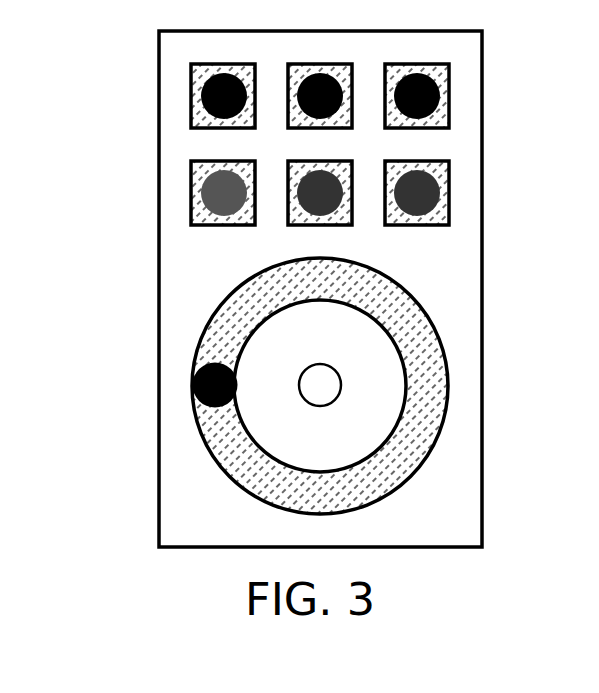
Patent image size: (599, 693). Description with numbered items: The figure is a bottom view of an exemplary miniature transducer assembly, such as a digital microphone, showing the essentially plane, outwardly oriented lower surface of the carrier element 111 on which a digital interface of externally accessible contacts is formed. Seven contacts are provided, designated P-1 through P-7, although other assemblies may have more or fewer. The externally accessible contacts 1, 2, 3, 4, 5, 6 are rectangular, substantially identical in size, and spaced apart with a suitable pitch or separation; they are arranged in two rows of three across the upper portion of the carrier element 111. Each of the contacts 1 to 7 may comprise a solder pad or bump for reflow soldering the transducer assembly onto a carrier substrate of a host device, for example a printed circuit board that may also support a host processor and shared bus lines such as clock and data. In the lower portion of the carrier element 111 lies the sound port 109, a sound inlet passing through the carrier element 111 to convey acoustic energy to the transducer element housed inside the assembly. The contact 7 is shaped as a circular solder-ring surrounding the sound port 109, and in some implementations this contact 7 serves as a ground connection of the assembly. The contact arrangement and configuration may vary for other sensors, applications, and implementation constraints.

The carrier element 111 is at (267, 289).
The sound port 109 is at (345, 406).
The externally accessible contact 1 is at (223, 96).
The externally accessible contact 2 is at (320, 96).
The externally accessible contact 3 is at (417, 96).
The externally accessible contact 4 is at (223, 193).
The externally accessible contact 5 is at (320, 193).
The externally accessible contact 6 is at (417, 193).
The contact 7 is at (215, 385).